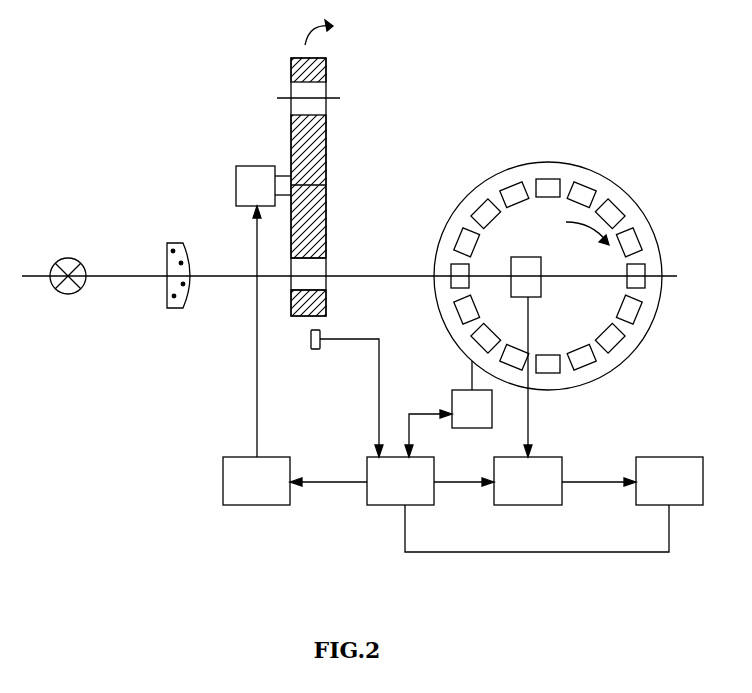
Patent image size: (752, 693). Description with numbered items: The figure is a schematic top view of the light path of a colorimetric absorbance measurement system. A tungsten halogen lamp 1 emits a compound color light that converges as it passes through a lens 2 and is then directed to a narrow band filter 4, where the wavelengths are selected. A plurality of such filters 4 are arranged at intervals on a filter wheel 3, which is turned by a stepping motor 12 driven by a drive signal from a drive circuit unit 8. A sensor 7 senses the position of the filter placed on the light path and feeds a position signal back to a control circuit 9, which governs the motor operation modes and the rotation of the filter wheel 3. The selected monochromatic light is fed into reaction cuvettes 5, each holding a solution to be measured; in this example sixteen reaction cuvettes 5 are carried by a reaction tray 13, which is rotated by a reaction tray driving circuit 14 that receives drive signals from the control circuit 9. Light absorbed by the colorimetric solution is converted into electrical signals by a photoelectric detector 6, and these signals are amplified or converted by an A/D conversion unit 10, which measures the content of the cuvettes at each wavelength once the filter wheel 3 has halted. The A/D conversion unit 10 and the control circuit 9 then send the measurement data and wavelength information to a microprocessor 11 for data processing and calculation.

The tungsten halogen lamp 1 is at (65, 300).
The lens 2 is at (175, 313).
The filter wheel 3 is at (288, 312).
The narrow band filter 4 is at (328, 272).
The reaction cuvette 5 is at (543, 175).
The photoelectric detector 6 is at (527, 250).
The sensor 7 is at (313, 355).
The drive circuit unit 8 is at (262, 512).
The control circuit 9 is at (393, 510).
The A/D conversion unit 10 is at (535, 510).
The microprocessor 11 is at (680, 507).
The stepping motor 12 is at (255, 163).
The reaction tray 13 is at (642, 200).
The reaction tray driving circuit 14 is at (477, 432).